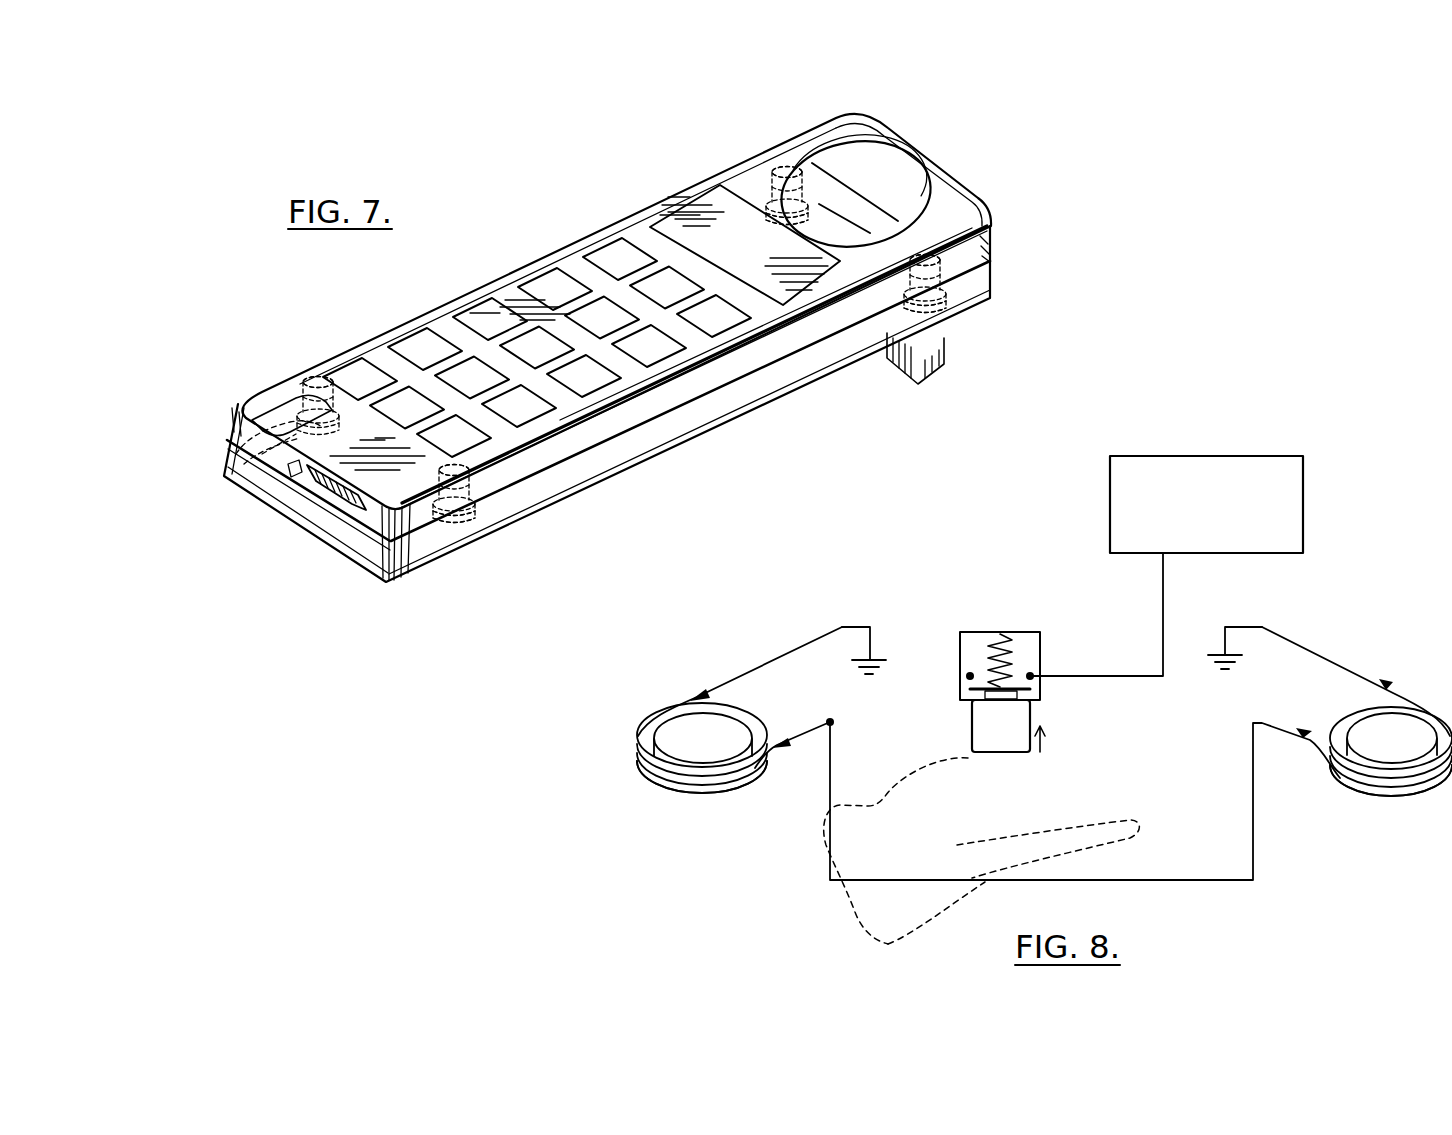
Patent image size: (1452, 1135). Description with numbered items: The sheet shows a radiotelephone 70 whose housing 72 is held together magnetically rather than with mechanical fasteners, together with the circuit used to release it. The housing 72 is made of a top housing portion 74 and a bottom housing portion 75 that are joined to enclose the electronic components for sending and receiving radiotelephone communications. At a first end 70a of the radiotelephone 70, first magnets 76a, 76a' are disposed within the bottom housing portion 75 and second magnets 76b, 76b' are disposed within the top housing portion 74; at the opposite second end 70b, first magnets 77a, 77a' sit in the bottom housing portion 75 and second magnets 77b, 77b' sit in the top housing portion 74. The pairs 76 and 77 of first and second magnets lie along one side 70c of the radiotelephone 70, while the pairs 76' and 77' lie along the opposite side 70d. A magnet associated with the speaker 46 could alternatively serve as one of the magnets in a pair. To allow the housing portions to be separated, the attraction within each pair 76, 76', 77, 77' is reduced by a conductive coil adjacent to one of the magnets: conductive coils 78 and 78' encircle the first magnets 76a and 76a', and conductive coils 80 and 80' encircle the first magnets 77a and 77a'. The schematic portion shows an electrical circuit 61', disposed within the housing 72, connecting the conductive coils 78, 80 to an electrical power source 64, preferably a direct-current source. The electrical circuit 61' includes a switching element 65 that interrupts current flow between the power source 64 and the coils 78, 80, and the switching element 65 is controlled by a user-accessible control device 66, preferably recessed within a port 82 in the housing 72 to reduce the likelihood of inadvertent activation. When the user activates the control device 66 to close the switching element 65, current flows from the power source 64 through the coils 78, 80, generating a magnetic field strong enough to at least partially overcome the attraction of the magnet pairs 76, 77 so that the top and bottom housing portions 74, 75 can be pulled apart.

In FIG. 7, the radiotelephone 70 is at (922, 138).
In FIG. 7, the first end 70a is at (250, 430).
In FIG. 7, the second end 70b is at (986, 208).
In FIG. 7, the side 70c is at (986, 258).
In FIG. 7, the opposite side 70d is at (372, 346).
In FIG. 7, the housing 72 is at (721, 144).
In FIG. 7, the speaker 46 is at (829, 164).
In FIG. 7, the top housing portion 74 is at (820, 330).
In FIG. 7, the bottom housing portion 75 is at (777, 389).
In FIG. 7, the pair of first and second magnets 76 is at (422, 544).
In FIG. 7, the first magnet 76a is at (492, 534).
In FIG. 8, the first magnet 76a is at (686, 763).
In FIG. 7, the second magnet 76b is at (513, 511).
In FIG. 7, the pair of first and second magnets 76' is at (288, 378).
In FIG. 7, the first magnet 76a' is at (248, 469).
In FIG. 7, the second magnet 76b' is at (334, 347).
In FIG. 7, the pair of first and second magnets 77 is at (982, 303).
In FIG. 7, the first magnet 77a is at (950, 354).
In FIG. 8, the first magnet 77a is at (1391, 723).
In FIG. 7, the second magnet 77b is at (987, 284).
In FIG. 7, the pair of first and second magnets 77' is at (740, 167).
In FIG. 7, the first magnet 77a' is at (710, 201).
In FIG. 7, the second magnet 77b' is at (765, 140).
In FIG. 7, the conductive coil 78 is at (459, 563).
In FIG. 8, the conductive coil 78 is at (702, 803).
In FIG. 7, the conductive coil 78' is at (254, 489).
In FIG. 7, the conductive coil 80 is at (969, 344).
In FIG. 8, the conductive coil 80 is at (1391, 805).
In FIG. 7, the conductive coil 80' is at (725, 182).
In FIG. 7, the port 82 is at (300, 472).
In FIG. 8, the electrical power source 64 is at (1208, 456).
In FIG. 8, the switching element 65 is at (1041, 642).
In FIG. 8, the control device 66 is at (972, 738).
In FIG. 8, the electrical circuit 61' is at (1044, 702).